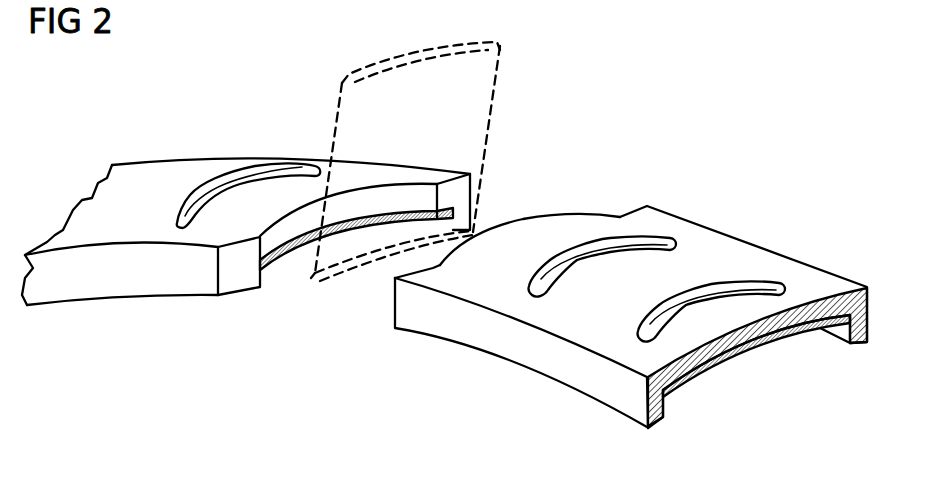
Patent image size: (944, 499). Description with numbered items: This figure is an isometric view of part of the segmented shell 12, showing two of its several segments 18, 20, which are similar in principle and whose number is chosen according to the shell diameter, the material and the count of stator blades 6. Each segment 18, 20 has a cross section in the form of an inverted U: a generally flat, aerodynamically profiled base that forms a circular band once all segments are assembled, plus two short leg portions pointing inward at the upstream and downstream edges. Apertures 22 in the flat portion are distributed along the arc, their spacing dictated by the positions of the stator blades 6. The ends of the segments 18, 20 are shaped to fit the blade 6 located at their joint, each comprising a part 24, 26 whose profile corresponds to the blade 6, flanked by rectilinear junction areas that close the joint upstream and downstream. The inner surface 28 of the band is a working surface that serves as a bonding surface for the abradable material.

The shell 12 is at (250, 90).
The blade 6 is at (493, 74).
The segment 18 is at (152, 172).
The segment 20 is at (710, 240).
The apertures 22 is at (184, 212).
The part 24 is at (280, 237).
The part 26 is at (533, 218).
The inner surface 28 is at (287, 252).